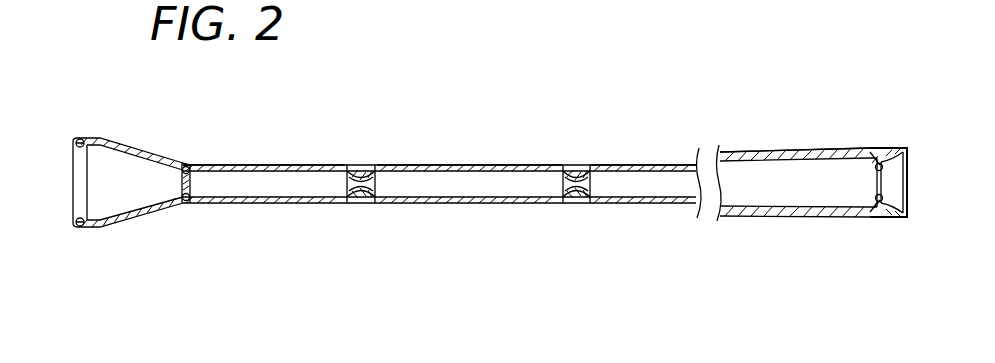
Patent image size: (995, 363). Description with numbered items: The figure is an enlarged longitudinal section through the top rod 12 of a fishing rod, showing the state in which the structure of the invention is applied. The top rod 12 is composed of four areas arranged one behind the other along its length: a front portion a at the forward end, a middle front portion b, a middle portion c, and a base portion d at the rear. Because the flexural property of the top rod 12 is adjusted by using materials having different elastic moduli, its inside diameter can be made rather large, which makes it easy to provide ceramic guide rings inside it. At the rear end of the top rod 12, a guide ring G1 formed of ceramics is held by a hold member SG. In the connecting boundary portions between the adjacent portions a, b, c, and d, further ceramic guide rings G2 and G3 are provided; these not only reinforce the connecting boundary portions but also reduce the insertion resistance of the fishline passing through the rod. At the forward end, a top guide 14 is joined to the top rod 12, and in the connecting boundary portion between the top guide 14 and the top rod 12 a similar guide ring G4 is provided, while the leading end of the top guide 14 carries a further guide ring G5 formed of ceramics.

The top rod 12 is at (790, 100).
The top guide 14 is at (141, 147).
The front portion a is at (302, 164).
The middle front portion b is at (447, 164).
The middle portion c is at (629, 164).
The base portion d is at (767, 155).
The guide ring G1 is at (868, 218).
The guide ring G2 is at (572, 208).
The guide ring G3 is at (357, 205).
The guide ring G4 is at (185, 206).
The guide ring G5 is at (78, 228).
The hold member SG is at (893, 218).